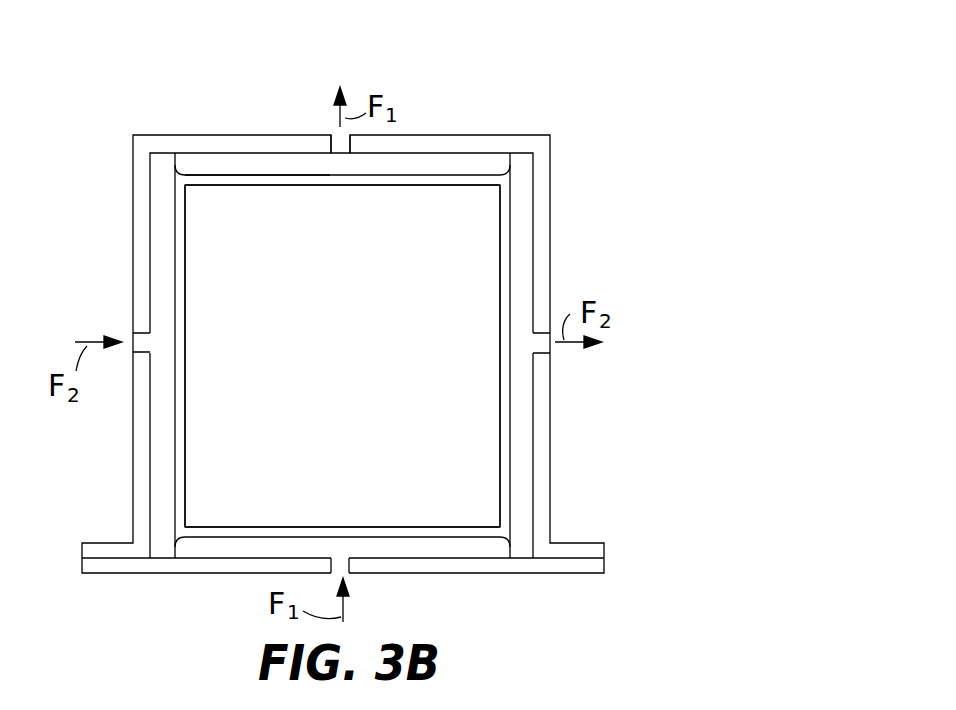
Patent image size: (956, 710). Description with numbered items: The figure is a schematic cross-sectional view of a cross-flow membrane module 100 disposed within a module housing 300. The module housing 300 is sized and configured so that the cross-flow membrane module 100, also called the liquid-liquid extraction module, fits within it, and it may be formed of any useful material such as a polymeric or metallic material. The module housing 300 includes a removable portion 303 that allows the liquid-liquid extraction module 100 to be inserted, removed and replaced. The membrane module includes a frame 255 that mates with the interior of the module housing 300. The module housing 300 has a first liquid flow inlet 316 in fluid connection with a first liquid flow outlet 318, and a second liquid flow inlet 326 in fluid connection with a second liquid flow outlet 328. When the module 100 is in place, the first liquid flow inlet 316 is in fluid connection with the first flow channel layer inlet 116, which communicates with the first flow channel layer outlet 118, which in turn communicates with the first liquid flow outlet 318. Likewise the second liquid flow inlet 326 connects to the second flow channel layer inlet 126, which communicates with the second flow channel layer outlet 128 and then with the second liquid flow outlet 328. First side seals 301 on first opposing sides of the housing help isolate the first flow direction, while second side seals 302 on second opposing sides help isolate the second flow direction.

The module housing 300 is at (520, 110).
The first side seals 301 is at (428, 160).
The second side seals 302 is at (160, 244).
The removable portion 303 is at (465, 567).
The first liquid flow inlet 316 is at (346, 563).
The first liquid flow outlet 318 is at (337, 142).
The second liquid flow inlet 326 is at (136, 338).
The second liquid flow outlet 328 is at (535, 352).
The cross-flow membrane module 100 is at (362, 368).
The frame 255 is at (237, 177).
The first flow channel layer outlet 118 is at (338, 177).
The first flow channel layer inlet 116 is at (342, 533).
The second flow channel layer inlet 126 is at (178, 330).
The second flow channel layer outlet 128 is at (510, 333).